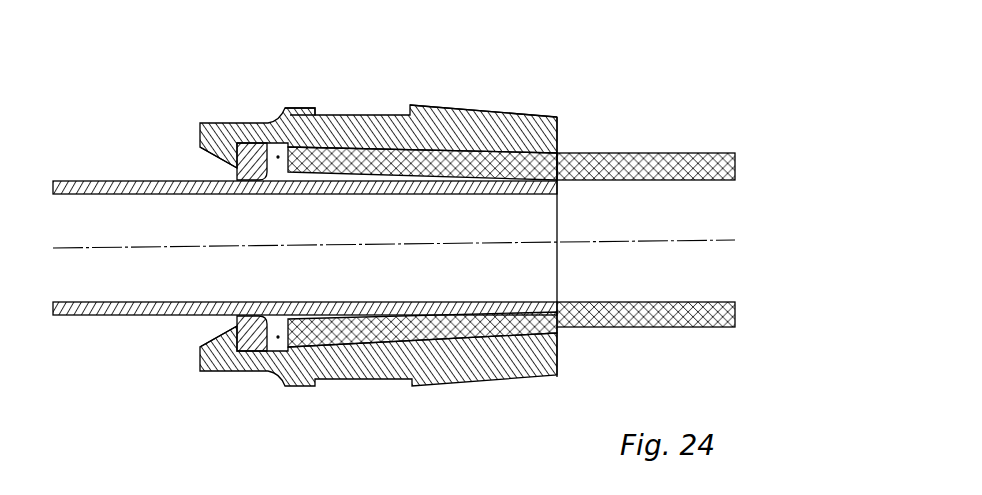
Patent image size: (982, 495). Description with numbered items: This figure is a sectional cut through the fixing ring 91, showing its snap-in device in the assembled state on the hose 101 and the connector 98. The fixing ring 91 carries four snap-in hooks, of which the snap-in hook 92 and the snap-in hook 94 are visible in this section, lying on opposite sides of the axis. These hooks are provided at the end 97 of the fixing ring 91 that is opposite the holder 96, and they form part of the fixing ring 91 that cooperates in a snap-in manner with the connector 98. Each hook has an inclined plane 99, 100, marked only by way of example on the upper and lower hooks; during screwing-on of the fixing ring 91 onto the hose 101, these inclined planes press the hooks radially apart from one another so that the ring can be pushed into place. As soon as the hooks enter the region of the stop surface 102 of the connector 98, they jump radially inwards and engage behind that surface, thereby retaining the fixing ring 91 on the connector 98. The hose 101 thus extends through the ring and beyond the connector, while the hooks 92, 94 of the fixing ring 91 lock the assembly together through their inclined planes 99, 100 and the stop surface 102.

The fixing ring 91 is at (445, 107).
The snap-in hook 92 is at (222, 118).
The snap-in hook 94 is at (228, 373).
The holder 96 is at (505, 140).
The end of the fixing ring 97 is at (317, 99).
The connector 98 is at (146, 170).
The inclined plane 99 is at (223, 153).
The inclined plane 100 is at (217, 333).
The hose 101 is at (622, 165).
The stop surface 102 is at (228, 178).